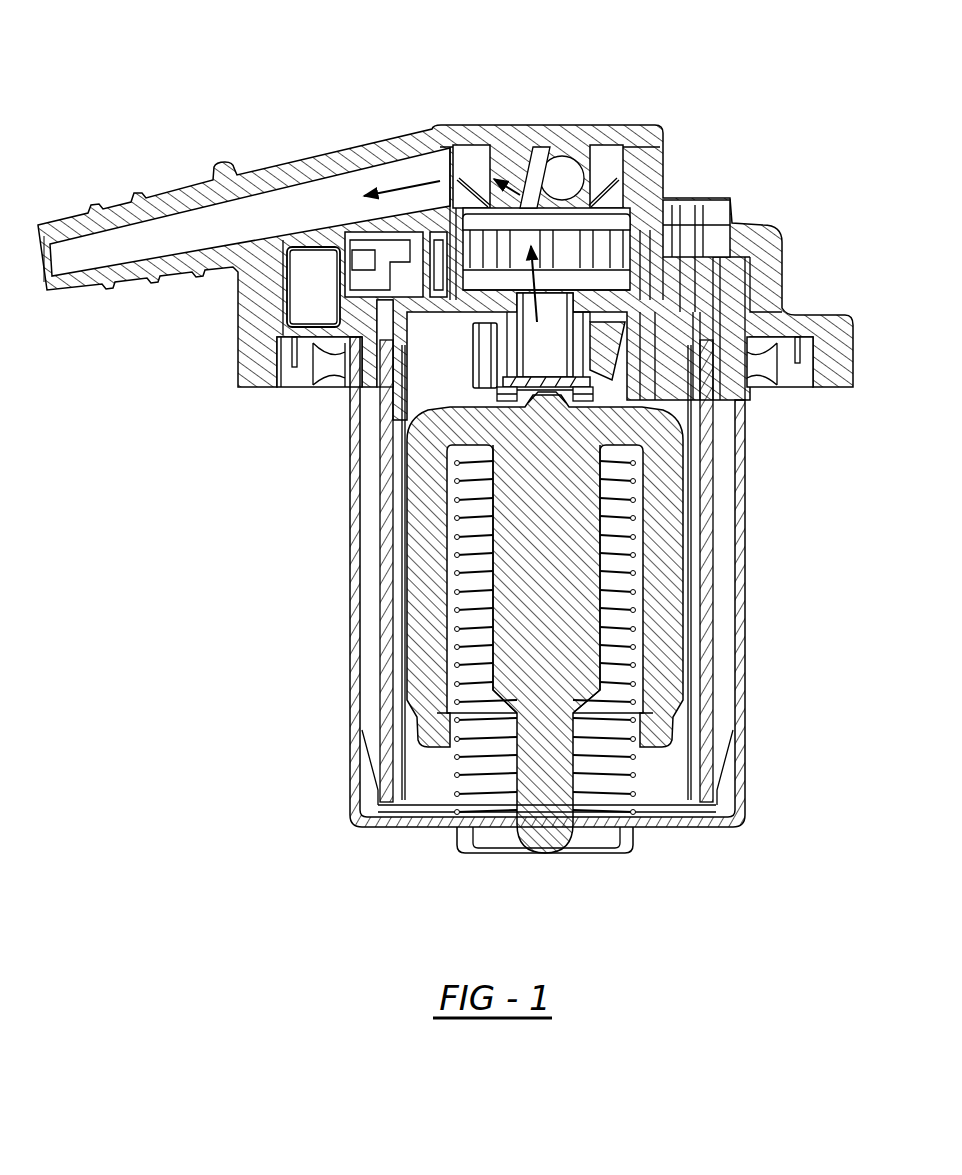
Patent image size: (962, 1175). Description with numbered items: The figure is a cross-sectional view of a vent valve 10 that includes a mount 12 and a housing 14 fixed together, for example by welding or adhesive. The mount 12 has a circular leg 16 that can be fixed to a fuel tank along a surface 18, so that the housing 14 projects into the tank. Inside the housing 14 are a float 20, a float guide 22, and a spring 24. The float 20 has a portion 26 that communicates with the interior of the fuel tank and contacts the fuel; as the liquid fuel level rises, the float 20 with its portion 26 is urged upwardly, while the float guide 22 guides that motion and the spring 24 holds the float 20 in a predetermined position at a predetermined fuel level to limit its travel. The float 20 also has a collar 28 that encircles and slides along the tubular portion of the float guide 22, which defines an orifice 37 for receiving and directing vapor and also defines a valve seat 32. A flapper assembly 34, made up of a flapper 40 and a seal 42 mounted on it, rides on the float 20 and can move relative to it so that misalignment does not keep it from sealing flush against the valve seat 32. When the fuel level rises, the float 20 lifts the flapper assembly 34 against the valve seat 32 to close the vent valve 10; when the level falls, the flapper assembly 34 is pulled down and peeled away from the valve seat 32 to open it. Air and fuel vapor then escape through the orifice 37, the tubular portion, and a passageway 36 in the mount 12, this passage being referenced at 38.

The vent valve 10 is at (104, 108).
The mount 12 is at (798, 192).
The housing 14 is at (764, 618).
The circular leg 16 is at (259, 353).
The surface 18 is at (258, 388).
The float 20 is at (688, 477).
The float guide 22 is at (716, 541).
The spring 24 is at (457, 590).
The portion 26 is at (548, 840).
The collar 28 is at (488, 363).
The valve seat 32 is at (617, 385).
The flapper assembly 34 is at (446, 388).
The passageway 36 is at (305, 202).
The orifice 37 is at (535, 348).
The passage of air and/or fuel vapor 38 is at (396, 188).
The flapper 40 is at (505, 385).
The seal 42 is at (600, 400).